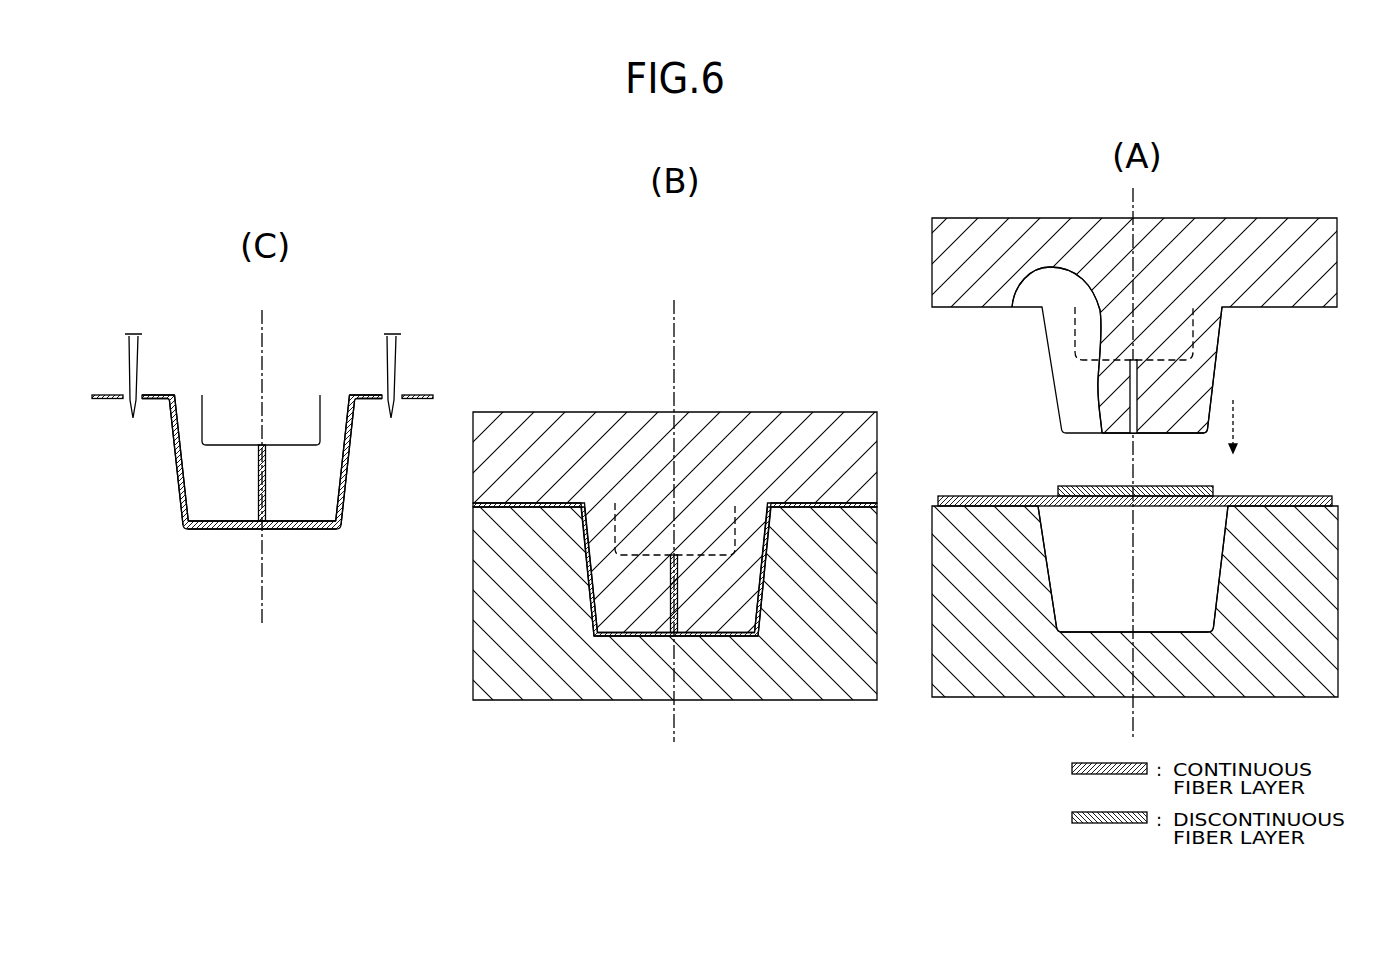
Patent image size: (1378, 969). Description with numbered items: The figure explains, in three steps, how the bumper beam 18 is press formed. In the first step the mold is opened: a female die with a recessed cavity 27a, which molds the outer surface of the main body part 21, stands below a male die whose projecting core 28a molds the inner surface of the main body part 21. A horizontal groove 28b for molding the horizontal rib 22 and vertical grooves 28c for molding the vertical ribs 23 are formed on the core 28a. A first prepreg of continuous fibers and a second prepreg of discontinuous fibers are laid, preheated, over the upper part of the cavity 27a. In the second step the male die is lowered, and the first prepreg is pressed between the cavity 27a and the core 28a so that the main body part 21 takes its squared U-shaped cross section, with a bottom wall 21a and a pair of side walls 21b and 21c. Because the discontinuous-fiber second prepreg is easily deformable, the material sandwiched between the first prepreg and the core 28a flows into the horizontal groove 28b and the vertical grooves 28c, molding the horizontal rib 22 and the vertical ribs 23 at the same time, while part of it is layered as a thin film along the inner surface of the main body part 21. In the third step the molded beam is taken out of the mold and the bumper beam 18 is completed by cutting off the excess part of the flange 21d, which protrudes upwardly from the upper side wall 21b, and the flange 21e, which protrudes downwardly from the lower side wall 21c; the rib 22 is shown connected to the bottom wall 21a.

The bumper beam 18 is at (298, 549).
The main body part 21 is at (219, 530).
The bottom wall 21a is at (322, 530).
The upper side wall 21b is at (347, 477).
The lower side wall 21c is at (178, 470).
The flange 21d is at (373, 400).
The flange 21e is at (153, 401).
The horizontal rib 22 is at (266, 484).
The vertical ribs 23 is at (230, 458).
The cavity 27a is at (1113, 630).
The core 28a is at (1213, 377).
The horizontal groove 28b is at (1134, 435).
The vertical grooves 28c is at (1068, 387).